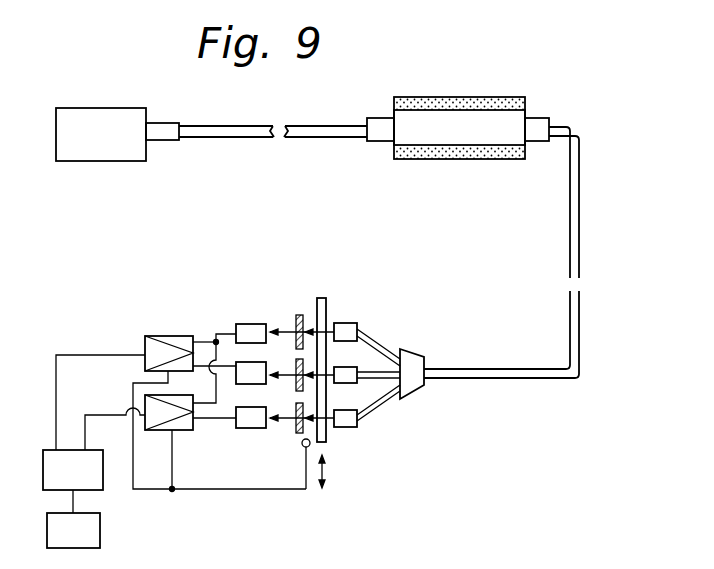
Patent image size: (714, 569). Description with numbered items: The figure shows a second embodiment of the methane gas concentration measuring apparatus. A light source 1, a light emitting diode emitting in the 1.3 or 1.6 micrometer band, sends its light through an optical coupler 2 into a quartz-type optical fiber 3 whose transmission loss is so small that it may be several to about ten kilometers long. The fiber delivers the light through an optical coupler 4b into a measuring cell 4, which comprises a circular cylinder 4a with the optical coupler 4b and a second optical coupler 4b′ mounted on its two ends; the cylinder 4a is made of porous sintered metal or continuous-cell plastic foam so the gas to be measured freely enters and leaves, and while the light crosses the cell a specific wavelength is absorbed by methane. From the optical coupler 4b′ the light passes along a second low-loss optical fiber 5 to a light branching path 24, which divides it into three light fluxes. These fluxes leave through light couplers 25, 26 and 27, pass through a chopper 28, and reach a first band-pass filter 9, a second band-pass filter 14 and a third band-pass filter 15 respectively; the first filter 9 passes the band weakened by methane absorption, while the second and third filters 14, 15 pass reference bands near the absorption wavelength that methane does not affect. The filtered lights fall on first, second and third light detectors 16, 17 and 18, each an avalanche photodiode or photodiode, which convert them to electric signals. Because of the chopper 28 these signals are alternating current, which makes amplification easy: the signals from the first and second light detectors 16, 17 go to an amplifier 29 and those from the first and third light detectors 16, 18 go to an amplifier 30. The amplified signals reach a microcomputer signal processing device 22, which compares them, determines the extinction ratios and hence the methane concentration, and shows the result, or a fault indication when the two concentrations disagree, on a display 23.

The light source 1 is at (102, 114).
The optical coupler 2 is at (164, 131).
The optical fiber 3 is at (236, 131).
The measuring cell 4 is at (459, 102).
The circular cylinder 4a is at (421, 102).
The optical coupler 4b is at (378, 131).
The optical coupler 4b′ is at (534, 128).
The optical fiber 5 is at (581, 236).
The first band-pass filter 9 is at (299, 315).
The second band-pass filter 14 is at (297, 430).
The third band-pass filter 15 is at (296, 384).
The first light detector 16 is at (247, 322).
The second light detector 17 is at (249, 428).
The third light detector 18 is at (256, 362).
The signal processing device 22 is at (73, 470).
The display 23 is at (73, 530).
The light branching path 24 is at (418, 358).
The light coupler 25 is at (350, 330).
The light coupler 26 is at (352, 372).
The light coupler 27 is at (351, 426).
The chopper 28 is at (327, 297).
The amplifier 29 is at (183, 431).
The amplifier 30 is at (165, 338).